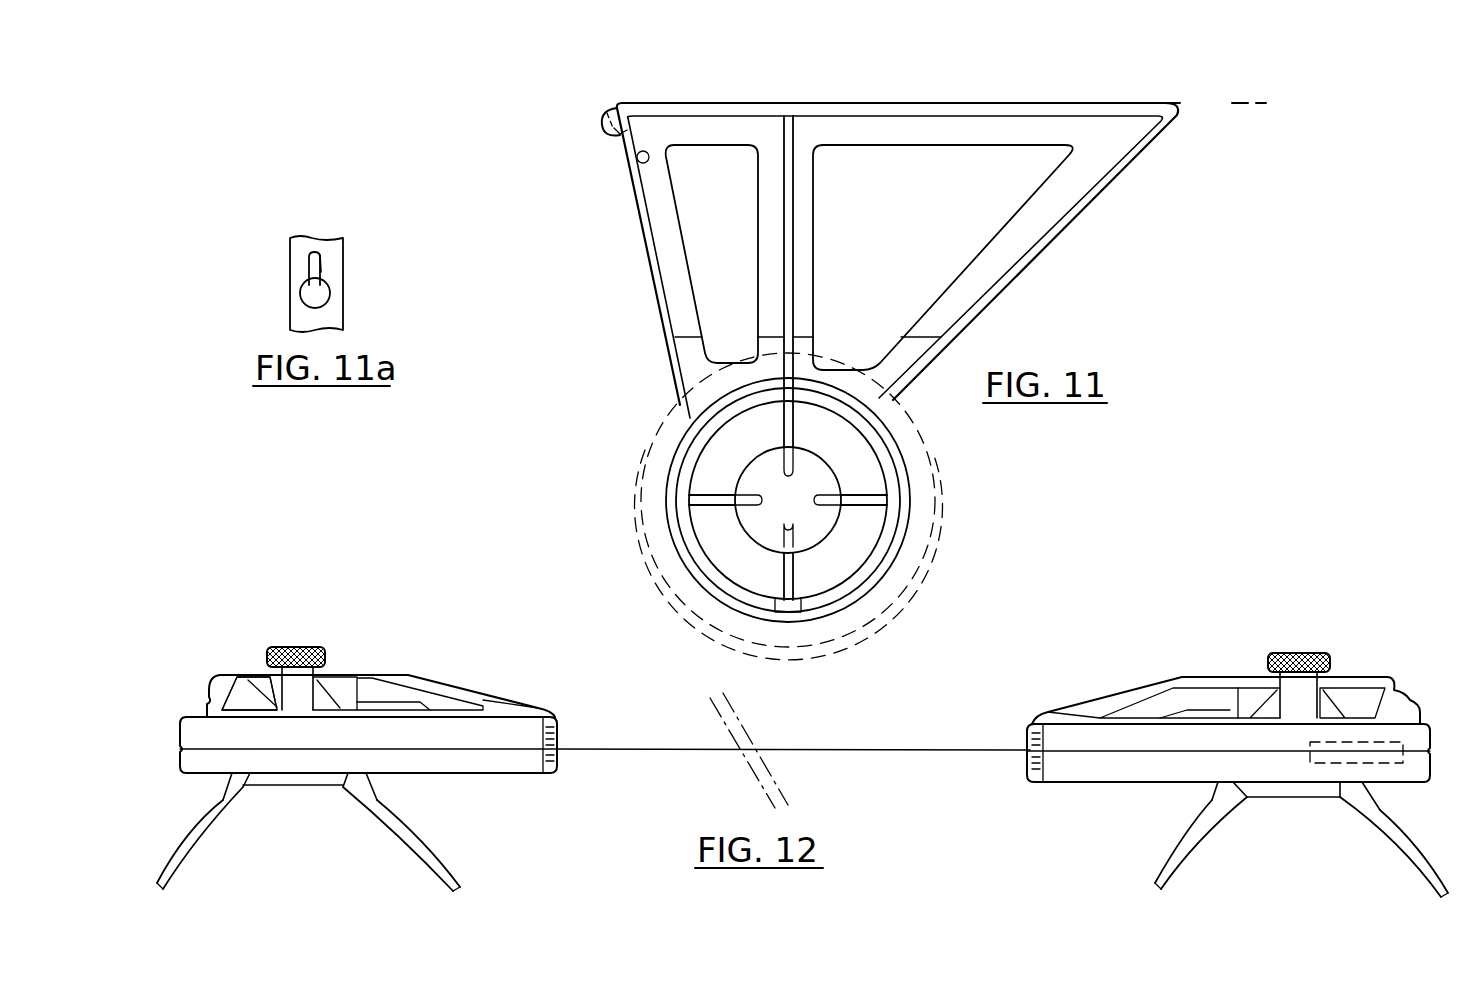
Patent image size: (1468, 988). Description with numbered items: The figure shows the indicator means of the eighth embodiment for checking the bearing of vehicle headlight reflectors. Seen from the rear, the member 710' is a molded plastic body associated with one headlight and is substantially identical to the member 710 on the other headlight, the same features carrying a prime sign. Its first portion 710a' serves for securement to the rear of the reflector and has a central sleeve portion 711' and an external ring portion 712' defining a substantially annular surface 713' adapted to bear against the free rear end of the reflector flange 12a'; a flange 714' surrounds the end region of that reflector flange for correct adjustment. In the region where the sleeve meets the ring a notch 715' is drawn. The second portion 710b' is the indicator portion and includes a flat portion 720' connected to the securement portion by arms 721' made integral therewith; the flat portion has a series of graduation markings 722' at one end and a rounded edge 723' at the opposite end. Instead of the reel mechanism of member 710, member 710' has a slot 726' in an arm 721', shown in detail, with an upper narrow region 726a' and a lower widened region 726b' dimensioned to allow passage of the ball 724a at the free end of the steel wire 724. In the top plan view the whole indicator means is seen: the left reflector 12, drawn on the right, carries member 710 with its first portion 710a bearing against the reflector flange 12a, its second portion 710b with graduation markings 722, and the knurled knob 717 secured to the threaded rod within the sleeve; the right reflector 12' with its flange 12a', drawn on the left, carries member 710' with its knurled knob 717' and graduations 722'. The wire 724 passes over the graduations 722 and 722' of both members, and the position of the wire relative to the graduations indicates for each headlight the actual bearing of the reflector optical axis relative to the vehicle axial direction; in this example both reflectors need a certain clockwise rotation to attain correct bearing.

In FIG. 12, the member 710 is at (1228, 694).
In FIG. 11, the member 710' is at (897, 260).
In FIG. 12, the member 710' is at (368, 694).
In FIG. 12, the first portion 710a is at (1370, 662).
In FIG. 11, the first portion 710a' is at (830, 506).
In FIG. 12, the first portion 710a' is at (237, 652).
In FIG. 12, the second portion 710b is at (1059, 691).
In FIG. 11, the second portion 710b' is at (601, 144).
In FIG. 12, the second portion 710b' is at (550, 677).
In FIG. 11, the central sleeve portion 711' is at (844, 551).
In FIG. 11, the external ring portion 712' is at (746, 500).
In FIG. 11, the annular surface 713' is at (856, 358).
In FIG. 11, the flange 714' is at (858, 500).
In FIG. 11, the notch 715' is at (812, 642).
In FIG. 12, the knurled knob 717 is at (1300, 661).
In FIG. 12, the knurled knob 717' is at (317, 652).
In FIG. 11, the flat portion 720' is at (1155, 83).
In FIG. 11, the arm 721' is at (835, 257).
In FIG. 11a, the arm 721' is at (352, 284).
In FIG. 12, the graduation markings 722 is at (1000, 775).
In FIG. 12, the graduation markings 722' is at (576, 770).
In FIG. 11, the rounded edge 723' is at (575, 185).
In FIG. 11, the wire 724 is at (1046, 102).
In FIG. 12, the wire 724 is at (916, 750).
In FIG. 11, the ball 724a is at (649, 152).
In FIG. 11a, the slot 726' is at (261, 258).
In FIG. 11a, the upper narrow region 726a' is at (374, 250).
In FIG. 11a, the lower widened region 726b' is at (265, 300).
In FIG. 12, the reflector 12 is at (1301, 847).
In FIG. 12, the reflector 12' is at (308, 839).
In FIG. 12, the flange 12a is at (1259, 799).
In FIG. 12, the flange 12a' is at (340, 786).